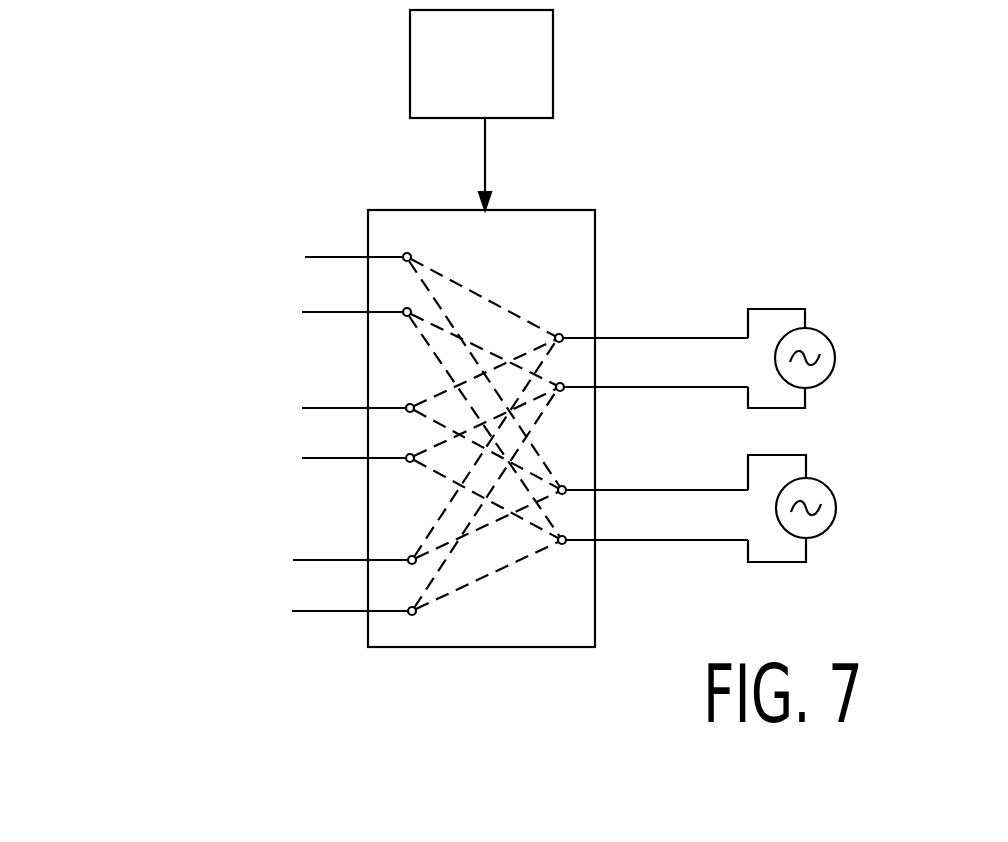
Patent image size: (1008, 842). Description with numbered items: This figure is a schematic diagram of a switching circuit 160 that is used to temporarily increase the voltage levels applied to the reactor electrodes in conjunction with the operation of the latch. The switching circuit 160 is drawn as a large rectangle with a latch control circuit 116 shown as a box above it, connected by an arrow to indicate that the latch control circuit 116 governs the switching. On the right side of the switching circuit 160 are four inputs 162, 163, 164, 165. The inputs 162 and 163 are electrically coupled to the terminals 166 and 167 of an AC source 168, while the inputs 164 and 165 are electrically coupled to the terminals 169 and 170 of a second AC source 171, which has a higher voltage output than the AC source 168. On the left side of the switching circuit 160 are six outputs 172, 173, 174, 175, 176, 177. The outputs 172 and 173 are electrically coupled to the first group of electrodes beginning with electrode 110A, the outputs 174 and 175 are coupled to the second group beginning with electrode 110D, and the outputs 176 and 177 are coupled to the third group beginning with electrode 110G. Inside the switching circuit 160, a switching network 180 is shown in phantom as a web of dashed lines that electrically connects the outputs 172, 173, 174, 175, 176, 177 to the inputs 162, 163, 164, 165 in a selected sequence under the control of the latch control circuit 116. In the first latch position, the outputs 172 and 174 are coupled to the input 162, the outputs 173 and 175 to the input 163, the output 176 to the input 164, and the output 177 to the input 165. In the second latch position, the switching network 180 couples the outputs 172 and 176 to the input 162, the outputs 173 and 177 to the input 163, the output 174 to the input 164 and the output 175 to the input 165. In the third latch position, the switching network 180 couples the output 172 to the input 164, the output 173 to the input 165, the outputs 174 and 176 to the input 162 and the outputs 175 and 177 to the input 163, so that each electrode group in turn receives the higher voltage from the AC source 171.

The latch control circuit 116 is at (553, 36).
The switching circuit 160 is at (625, 183).
The electrode 110A is at (125, 292).
The electrode 110D is at (124, 432).
The electrode 110G is at (129, 590).
The output 172 is at (337, 257).
The output 173 is at (337, 312).
The output 174 is at (330, 408).
The output 175 is at (347, 432).
The output 176 is at (341, 560).
The output 177 is at (344, 611).
The switching network 180 is at (490, 591).
The input 162 is at (607, 338).
The input 163 is at (613, 387).
The input 164 is at (625, 490).
The input 165 is at (630, 540).
The terminal 166 is at (770, 309).
The terminal 167 is at (800, 408).
The AC source 168 is at (826, 337).
The terminal 169 is at (790, 455).
The terminal 170 is at (795, 562).
The AC source 171 is at (836, 497).